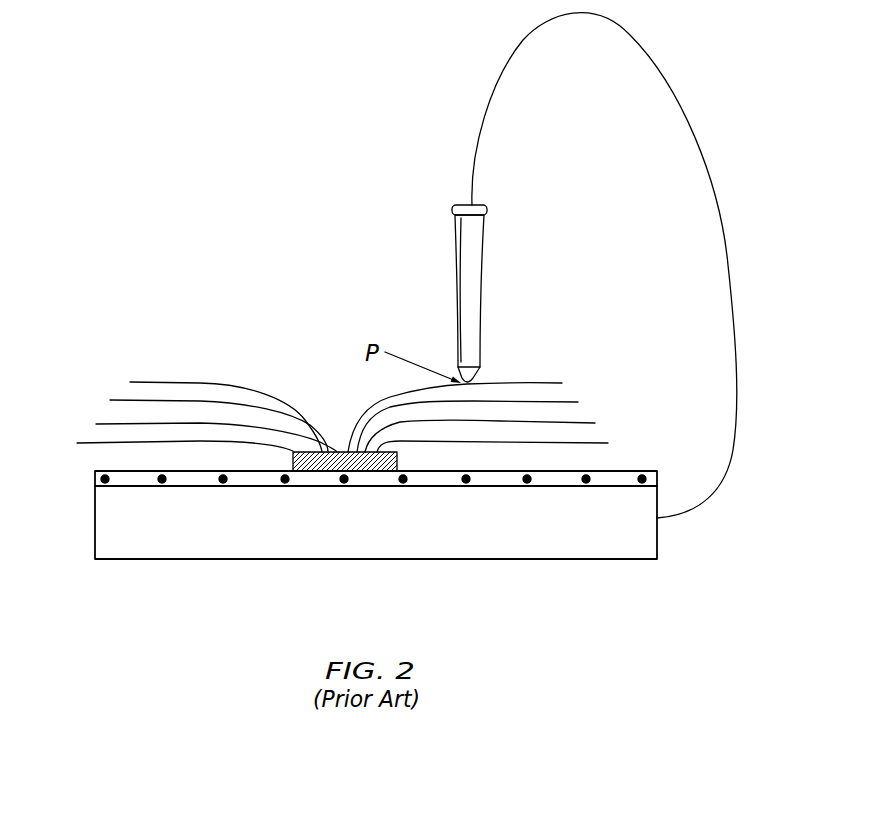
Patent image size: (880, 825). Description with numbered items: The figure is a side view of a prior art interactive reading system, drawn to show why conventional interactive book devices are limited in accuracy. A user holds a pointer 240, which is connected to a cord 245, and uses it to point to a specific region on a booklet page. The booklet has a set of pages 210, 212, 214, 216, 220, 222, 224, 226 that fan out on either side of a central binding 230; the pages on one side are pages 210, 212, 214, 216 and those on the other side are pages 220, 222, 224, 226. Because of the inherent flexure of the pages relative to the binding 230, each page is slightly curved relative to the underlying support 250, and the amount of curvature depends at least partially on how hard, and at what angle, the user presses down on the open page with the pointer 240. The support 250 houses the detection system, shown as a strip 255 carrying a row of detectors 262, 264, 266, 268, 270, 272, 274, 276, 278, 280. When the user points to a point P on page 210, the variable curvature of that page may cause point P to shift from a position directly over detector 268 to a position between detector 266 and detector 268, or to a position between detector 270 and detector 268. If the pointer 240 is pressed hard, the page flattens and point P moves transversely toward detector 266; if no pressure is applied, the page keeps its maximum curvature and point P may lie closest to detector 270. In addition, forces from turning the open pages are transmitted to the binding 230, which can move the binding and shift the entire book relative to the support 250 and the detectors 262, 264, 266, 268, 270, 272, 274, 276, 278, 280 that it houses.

The page 210 is at (515, 380).
The page 212 is at (565, 400).
The page 214 is at (582, 423).
The page 216 is at (606, 442).
The page 220 is at (157, 382).
The page 222 is at (130, 400).
The page 224 is at (108, 424).
The page 226 is at (90, 443).
The binding 230 is at (342, 450).
The pointer 240 is at (483, 280).
The cable 245 is at (703, 160).
The support 250 is at (657, 540).
The connector strip 255 is at (143, 487).
The terminal 262 is at (647, 486).
The terminal 264 is at (586, 486).
The detector 266 is at (527, 486).
The detector 268 is at (466, 486).
The detector 270 is at (403, 486).
The terminal 272 is at (344, 486).
The terminal 274 is at (285, 486).
The terminal 276 is at (223, 486).
The terminal 278 is at (158, 486).
The terminal 280 is at (98, 481).